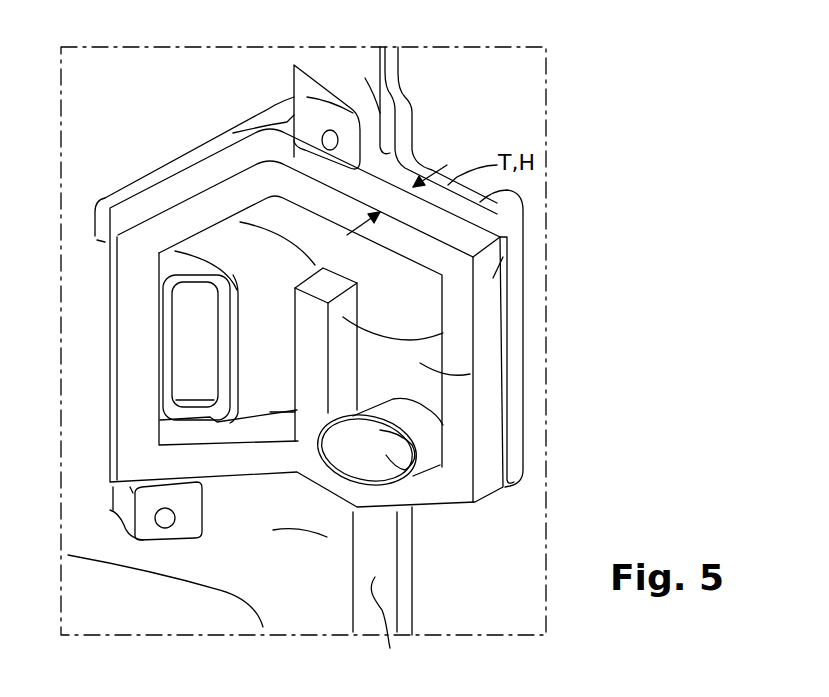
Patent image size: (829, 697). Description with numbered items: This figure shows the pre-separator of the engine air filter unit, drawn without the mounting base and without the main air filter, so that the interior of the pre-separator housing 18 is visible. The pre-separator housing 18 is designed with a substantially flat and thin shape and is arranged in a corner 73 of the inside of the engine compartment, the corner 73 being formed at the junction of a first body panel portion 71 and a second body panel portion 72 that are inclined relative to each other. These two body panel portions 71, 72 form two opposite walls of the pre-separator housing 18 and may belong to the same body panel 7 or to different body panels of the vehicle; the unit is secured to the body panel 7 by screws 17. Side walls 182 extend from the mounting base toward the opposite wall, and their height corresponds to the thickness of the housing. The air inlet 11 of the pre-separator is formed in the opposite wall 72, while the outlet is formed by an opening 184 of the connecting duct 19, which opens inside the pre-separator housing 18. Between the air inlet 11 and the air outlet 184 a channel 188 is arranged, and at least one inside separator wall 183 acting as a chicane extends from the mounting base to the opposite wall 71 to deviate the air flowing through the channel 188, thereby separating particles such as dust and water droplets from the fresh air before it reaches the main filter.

The body panel 7 is at (178, 79).
The air inlet 11 is at (193, 350).
The screws 17 is at (330, 142).
The pre-separator housing 18 is at (98, 230).
The connecting duct 19 is at (413, 405).
The first body panel portion 71 is at (592, 277).
The second body panel portion 72 is at (260, 297).
The corner 73 is at (300, 530).
The side walls 182 is at (527, 203).
The inside separator wall 183 is at (443, 333).
The opening 184 is at (408, 452).
The channel 188 is at (470, 374).